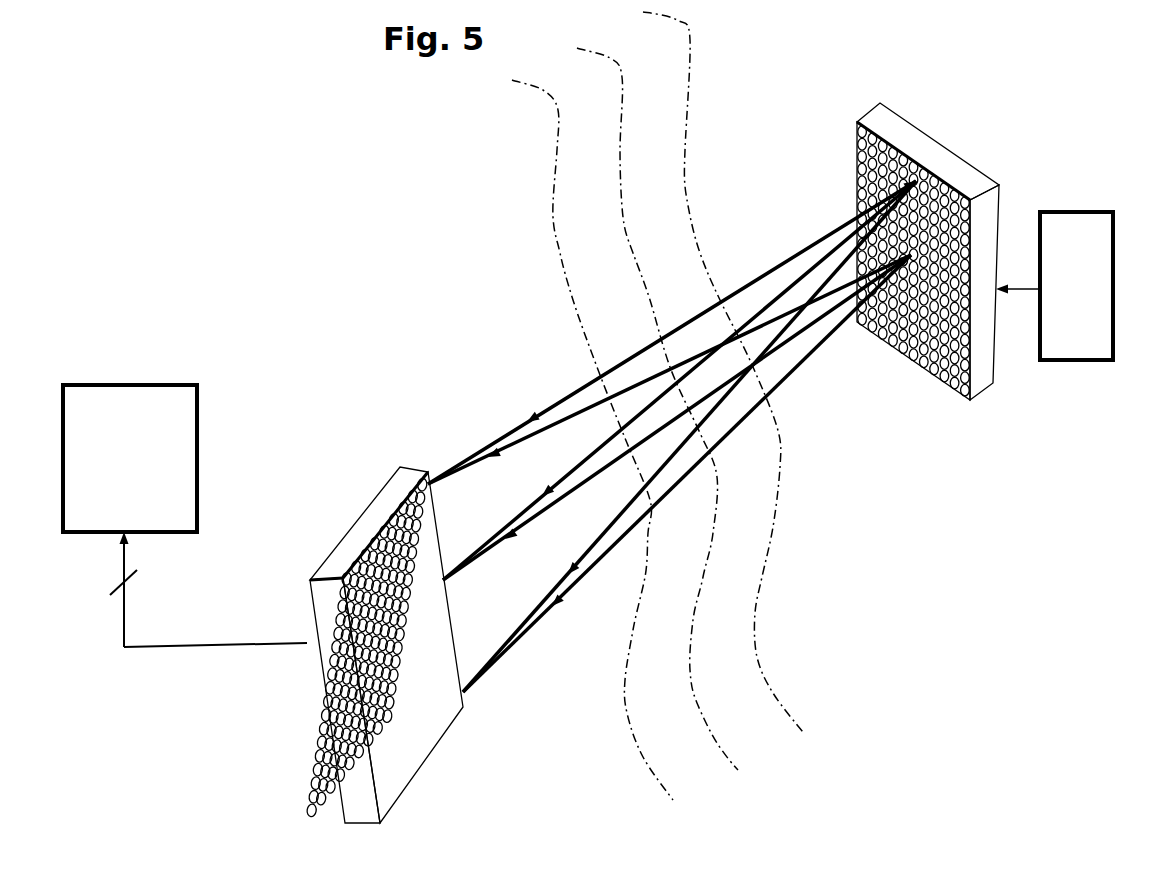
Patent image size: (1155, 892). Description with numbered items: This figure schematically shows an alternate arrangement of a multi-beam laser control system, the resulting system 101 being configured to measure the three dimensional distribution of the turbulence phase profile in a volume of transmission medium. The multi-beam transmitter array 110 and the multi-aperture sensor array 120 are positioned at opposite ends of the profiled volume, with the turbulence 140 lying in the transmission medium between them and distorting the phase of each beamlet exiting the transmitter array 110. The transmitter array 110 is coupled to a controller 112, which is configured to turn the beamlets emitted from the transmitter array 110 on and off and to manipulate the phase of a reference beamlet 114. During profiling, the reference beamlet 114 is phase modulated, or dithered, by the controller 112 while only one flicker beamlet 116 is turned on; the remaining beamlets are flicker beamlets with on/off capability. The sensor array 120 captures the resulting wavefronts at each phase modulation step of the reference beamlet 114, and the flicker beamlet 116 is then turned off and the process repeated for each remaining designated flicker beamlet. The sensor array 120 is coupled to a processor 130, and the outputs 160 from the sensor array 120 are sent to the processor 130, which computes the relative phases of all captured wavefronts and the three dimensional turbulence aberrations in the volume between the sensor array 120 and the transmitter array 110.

The system 101 is at (203, 184).
The multi-beam transmitter array 110 is at (973, 160).
The controller 112 is at (1054, 286).
The reference beamlet 114 is at (867, 358).
The flicker beamlet 116 is at (813, 308).
The multi-aperture sensor array 120 is at (420, 767).
The processor 130 is at (130, 458).
The turbulence 140 is at (760, 772).
The sensor array outputs 160 is at (175, 647).